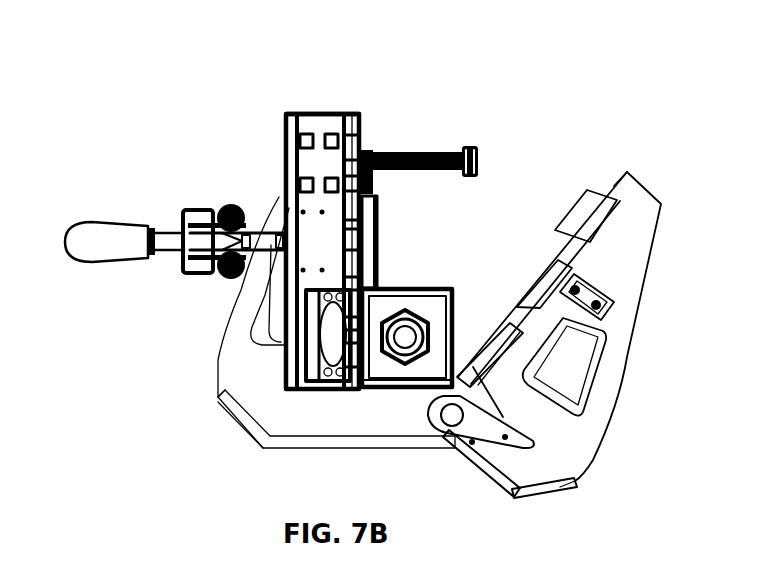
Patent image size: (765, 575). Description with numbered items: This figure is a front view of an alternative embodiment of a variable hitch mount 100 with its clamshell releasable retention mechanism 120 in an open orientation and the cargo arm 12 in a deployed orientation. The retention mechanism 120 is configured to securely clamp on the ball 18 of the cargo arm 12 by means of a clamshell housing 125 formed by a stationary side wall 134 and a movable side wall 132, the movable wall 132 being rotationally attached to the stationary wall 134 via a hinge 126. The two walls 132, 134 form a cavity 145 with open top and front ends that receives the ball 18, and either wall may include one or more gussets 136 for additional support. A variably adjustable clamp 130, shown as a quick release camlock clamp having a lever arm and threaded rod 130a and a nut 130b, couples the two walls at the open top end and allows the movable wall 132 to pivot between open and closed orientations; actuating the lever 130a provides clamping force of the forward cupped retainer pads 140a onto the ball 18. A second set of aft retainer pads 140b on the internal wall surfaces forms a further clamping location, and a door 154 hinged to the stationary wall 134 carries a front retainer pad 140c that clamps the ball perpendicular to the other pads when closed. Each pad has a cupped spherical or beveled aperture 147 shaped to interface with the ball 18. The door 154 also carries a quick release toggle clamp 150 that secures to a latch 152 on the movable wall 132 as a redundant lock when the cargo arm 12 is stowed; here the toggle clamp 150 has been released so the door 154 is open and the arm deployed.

The variable hitch mount 100 is at (105, 110).
The cargo arm 12 is at (454, 314).
The ball 18 is at (437, 285).
The clamshell releasable retention mechanism 120 is at (644, 420).
The clamshell housing 125 is at (281, 82).
The hinge 126 is at (452, 446).
The variably adjustable clamp 130 is at (400, 102).
The lever arm and threaded rod 130a is at (385, 150).
The nut 130b is at (475, 146).
The movable side wall 132 is at (622, 188).
The stationary side wall 134 is at (360, 113).
The gussets 136 is at (593, 460).
The forward cupped retainer pads 140a is at (487, 375).
The aft retainer pads 140b is at (378, 222).
The front retainer pad 140c is at (333, 390).
The cavity 145 is at (530, 188).
The cupped spherical or beveled aperture 147 is at (377, 252).
The quick release toggle clamp 150 is at (136, 231).
The latch 152 is at (618, 325).
The door 154 is at (285, 128).